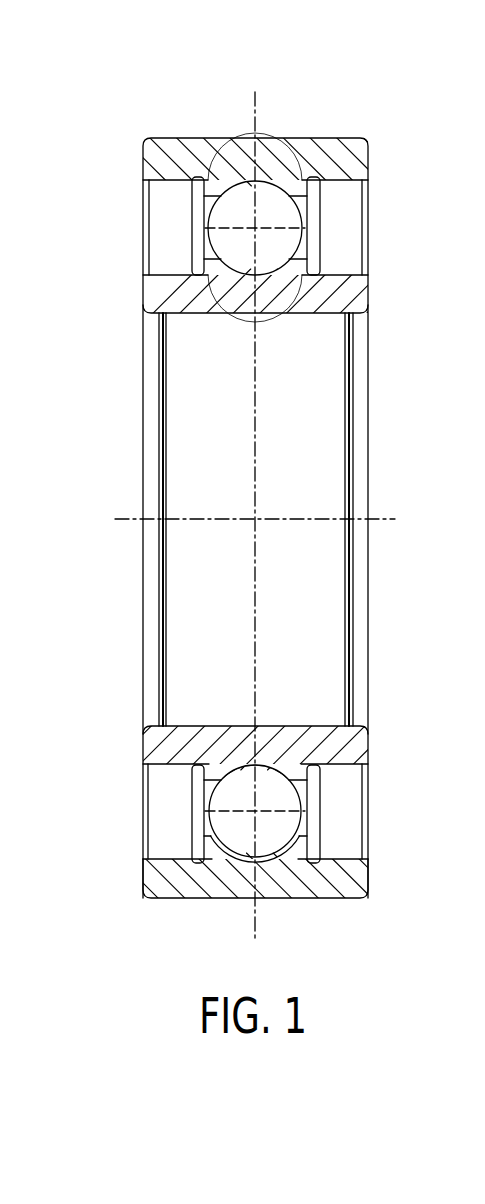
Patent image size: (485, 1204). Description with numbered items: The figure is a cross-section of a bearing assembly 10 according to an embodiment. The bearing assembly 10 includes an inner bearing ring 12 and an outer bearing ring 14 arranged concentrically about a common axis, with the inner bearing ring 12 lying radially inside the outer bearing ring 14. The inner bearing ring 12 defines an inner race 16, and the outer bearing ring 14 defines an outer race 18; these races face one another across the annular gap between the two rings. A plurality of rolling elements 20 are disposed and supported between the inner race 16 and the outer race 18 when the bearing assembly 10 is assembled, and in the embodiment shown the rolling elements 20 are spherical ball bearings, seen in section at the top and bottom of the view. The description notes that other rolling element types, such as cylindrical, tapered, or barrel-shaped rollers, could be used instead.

The bearing assembly 10 is at (118, 115).
The inner bearing ring 12 is at (158, 283).
The outer bearing ring 14 is at (152, 155).
The inner race 16 is at (259, 278).
The outer race 18 is at (255, 180).
The rolling elements 20 is at (283, 205).